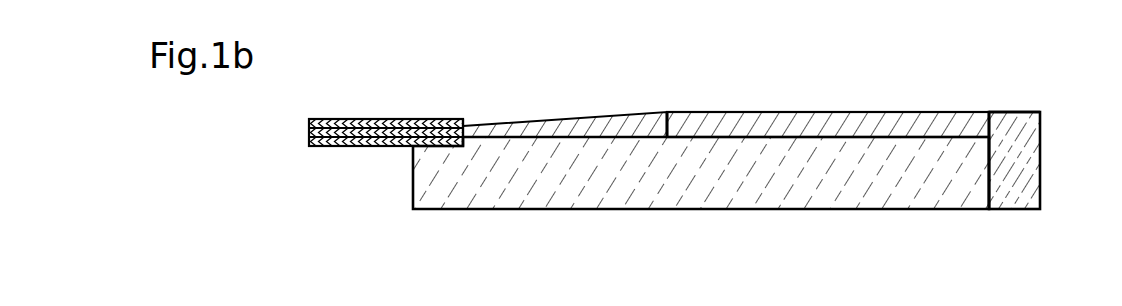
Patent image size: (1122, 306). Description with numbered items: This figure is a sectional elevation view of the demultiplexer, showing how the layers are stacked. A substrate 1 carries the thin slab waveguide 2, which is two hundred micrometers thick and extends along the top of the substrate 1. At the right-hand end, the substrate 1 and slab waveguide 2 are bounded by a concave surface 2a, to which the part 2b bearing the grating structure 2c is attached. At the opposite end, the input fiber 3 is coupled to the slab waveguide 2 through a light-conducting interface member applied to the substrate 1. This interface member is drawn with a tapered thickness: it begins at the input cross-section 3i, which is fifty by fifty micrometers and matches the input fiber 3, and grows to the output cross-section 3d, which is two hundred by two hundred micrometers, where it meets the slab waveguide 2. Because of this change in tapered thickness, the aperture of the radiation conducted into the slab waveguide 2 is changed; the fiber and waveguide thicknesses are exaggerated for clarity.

The substrate 1 is at (525, 188).
The slab waveguide 2 is at (852, 113).
The concave surface 2a is at (987, 162).
The part with grating structure 2b is at (1013, 177).
The grating structure 2c is at (997, 127).
The input fiber 3 is at (392, 112).
The output cross-section of interface member 3d is at (662, 112).
The input cross-section of interface member 3i is at (463, 132).